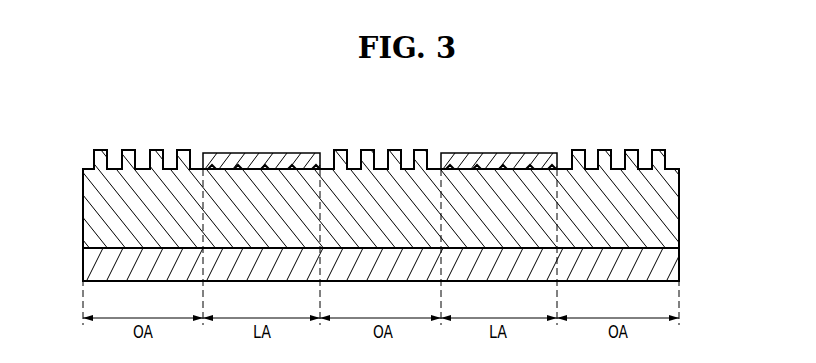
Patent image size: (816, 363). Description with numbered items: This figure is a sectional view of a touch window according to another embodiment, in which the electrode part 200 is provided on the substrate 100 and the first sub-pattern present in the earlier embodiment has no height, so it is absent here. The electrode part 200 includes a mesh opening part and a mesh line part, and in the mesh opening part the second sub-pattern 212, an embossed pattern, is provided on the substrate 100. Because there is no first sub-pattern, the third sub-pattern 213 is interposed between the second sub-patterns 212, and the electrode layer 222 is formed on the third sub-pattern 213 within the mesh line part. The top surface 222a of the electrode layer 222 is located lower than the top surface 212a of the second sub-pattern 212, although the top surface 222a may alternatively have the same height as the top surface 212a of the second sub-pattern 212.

The substrate 100 is at (680, 261).
The electrode part 200 is at (680, 212).
The second sub-pattern 212 is at (658, 151).
The top surface of the second sub-pattern 212a is at (187, 149).
The third sub-pattern 213 is at (547, 167).
The electrode layer 222 is at (475, 168).
The top surface of the electrode layer 222a is at (262, 153).